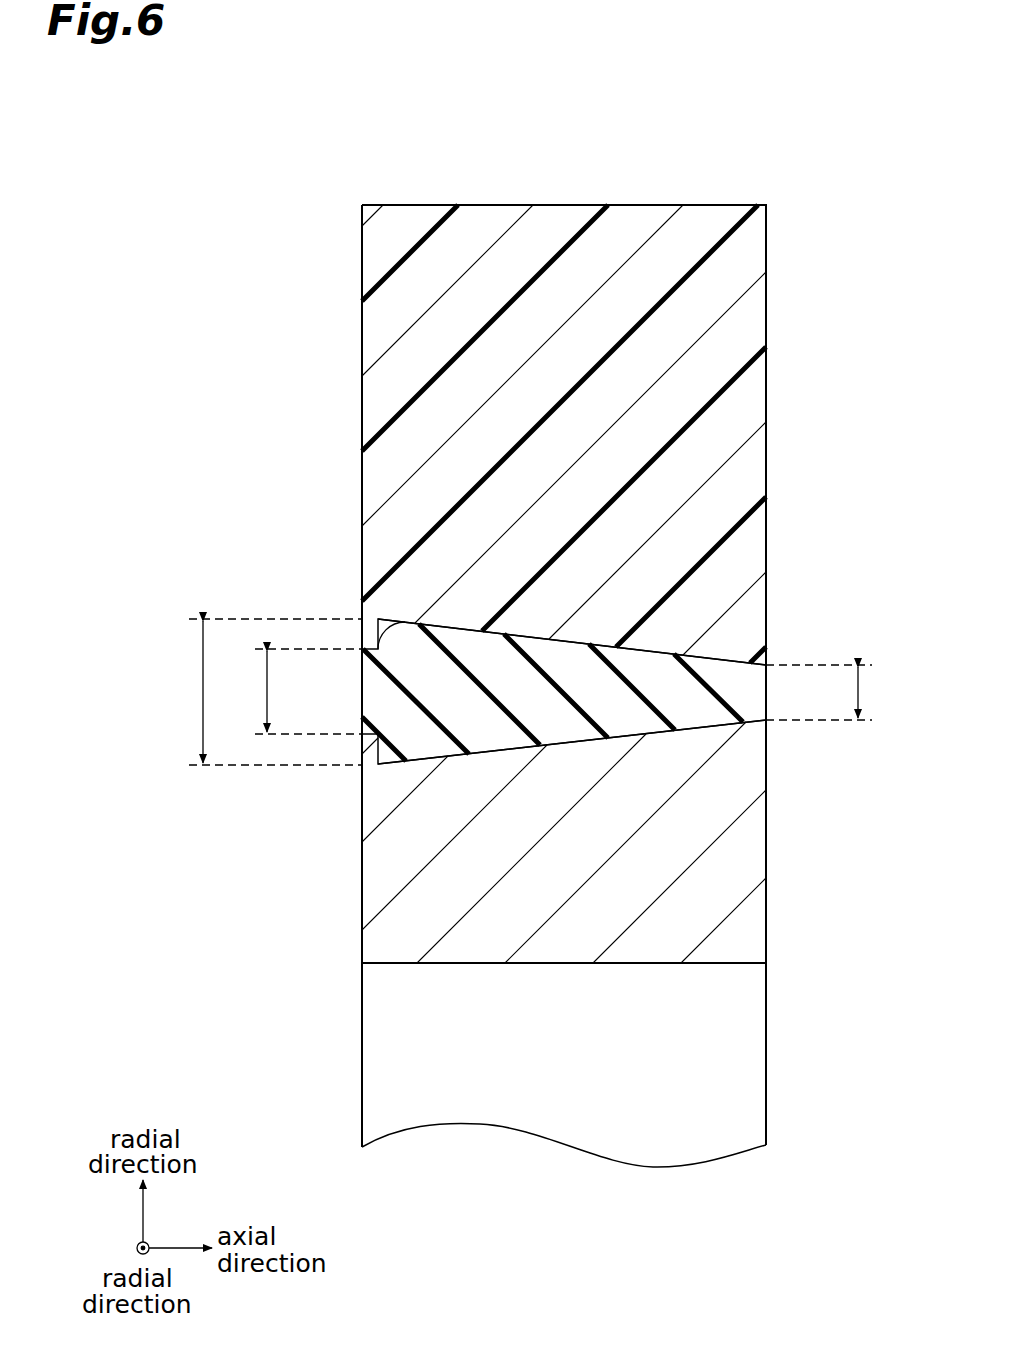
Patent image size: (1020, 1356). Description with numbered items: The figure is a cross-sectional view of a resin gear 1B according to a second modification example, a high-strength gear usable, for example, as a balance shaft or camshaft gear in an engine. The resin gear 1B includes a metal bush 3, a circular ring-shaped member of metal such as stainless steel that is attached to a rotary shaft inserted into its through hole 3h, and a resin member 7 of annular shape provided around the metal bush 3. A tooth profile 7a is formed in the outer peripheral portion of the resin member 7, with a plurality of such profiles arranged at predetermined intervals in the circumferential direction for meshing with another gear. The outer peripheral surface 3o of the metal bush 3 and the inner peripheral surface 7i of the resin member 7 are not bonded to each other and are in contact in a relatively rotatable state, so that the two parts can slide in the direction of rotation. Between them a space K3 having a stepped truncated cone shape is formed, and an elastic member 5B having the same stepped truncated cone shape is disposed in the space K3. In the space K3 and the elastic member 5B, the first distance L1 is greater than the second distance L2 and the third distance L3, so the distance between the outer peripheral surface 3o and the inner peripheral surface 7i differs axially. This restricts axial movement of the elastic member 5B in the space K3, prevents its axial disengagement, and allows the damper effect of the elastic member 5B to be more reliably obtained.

The resin gear 1B is at (282, 233).
The resin member 7 is at (748, 393).
The tooth profile 7a is at (765, 205).
The inner peripheral surface 7i is at (735, 663).
The elastic member 5B is at (370, 700).
The space K3 is at (378, 652).
The metal bush 3 is at (750, 855).
The outer peripheral surface 3o is at (750, 721).
The through hole 3h is at (695, 1076).
The first distance L1 is at (262, 692).
The second distance L2 is at (297, 691).
The third distance L3 is at (834, 692).